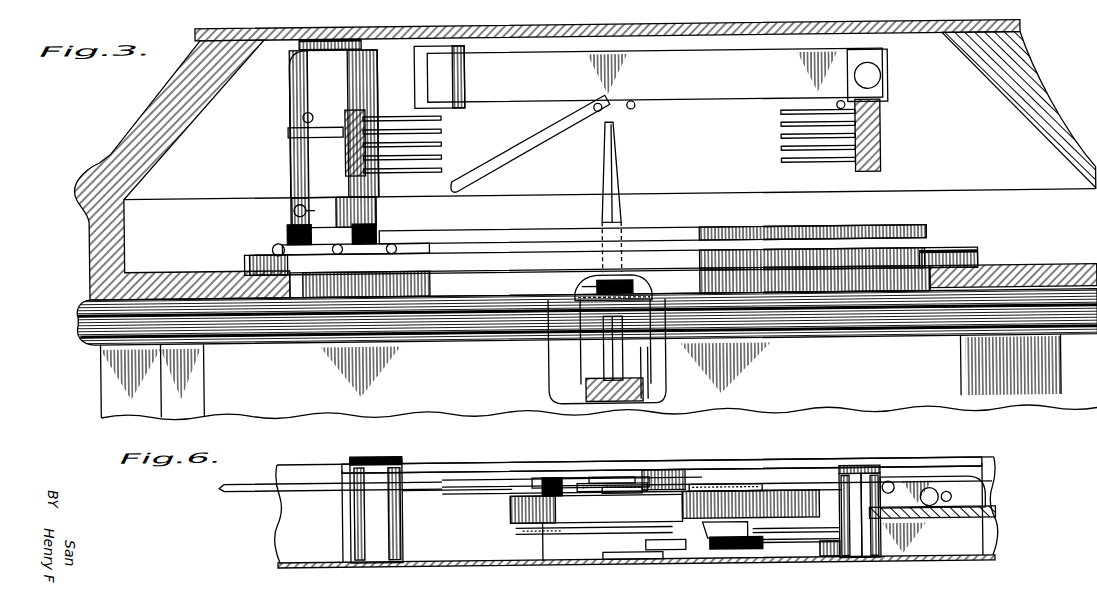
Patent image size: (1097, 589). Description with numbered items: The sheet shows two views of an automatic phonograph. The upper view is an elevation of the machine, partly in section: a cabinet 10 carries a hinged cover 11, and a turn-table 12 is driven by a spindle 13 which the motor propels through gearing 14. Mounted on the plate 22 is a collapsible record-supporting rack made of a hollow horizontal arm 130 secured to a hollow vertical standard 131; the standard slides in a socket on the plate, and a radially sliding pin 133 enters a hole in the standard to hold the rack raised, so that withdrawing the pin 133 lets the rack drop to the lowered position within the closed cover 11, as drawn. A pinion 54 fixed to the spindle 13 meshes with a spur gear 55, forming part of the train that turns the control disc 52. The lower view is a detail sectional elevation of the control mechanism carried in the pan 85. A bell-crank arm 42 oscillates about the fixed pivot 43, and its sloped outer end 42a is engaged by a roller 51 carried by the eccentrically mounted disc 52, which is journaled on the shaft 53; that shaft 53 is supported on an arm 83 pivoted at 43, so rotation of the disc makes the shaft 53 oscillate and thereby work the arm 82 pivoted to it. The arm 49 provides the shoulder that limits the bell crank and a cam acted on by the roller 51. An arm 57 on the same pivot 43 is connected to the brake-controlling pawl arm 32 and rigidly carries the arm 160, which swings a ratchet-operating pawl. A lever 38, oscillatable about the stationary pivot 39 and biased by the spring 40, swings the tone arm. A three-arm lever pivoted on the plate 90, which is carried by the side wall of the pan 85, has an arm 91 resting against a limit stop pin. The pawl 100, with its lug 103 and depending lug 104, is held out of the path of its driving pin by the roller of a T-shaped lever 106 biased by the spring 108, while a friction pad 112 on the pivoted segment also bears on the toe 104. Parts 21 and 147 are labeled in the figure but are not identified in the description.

In FIG. 3, the cabinet 10 is at (587, 355).
In FIG. 3, the hinged cover 11 is at (1017, 74).
In FIG. 3, the turn-table 12 is at (903, 234).
In FIG. 3, the spindle 13 is at (612, 345).
In FIG. 3, the gearing 14 is at (633, 408).
In FIG. 3, the plate 22 is at (975, 263).
In FIG. 3, the pinion 54 is at (578, 293).
In FIG. 3, the spur gear 55 is at (642, 292).
In FIG. 3, the hollow horizontal arm 130 is at (691, 106).
In FIG. 3, the hollow vertical standard 131 is at (305, 161).
In FIG. 3, the pin 133 is at (295, 213).
In FIG. 3, the lever 147 is at (528, 160).
In FIG. 6, the plate 21 is at (558, 481).
In FIG. 6, the pawl arm 32 is at (528, 479).
In FIG. 6, the lever 38 is at (860, 480).
In FIG. 6, the stationary pivot 39 is at (868, 484).
In FIG. 6, the spring 40 is at (992, 538).
In FIG. 6, the arm 42 is at (416, 498).
In FIG. 6, the sloped outer end 42a is at (605, 490).
In FIG. 6, the fixed pivot 43 is at (410, 461).
In FIG. 6, the arm 49 is at (587, 471).
In FIG. 6, the roller 51 is at (603, 481).
In FIG. 6, the disc 52 is at (596, 508).
In FIG. 6, the shaft 53 is at (667, 455).
In FIG. 6, the arm 57 is at (474, 483).
In FIG. 6, the arm 82 is at (690, 471).
In FIG. 6, the arm 83 is at (450, 452).
In FIG. 6, the pan 85 is at (487, 568).
In FIG. 6, the plate 90 is at (923, 486).
In FIG. 6, the arm 91 is at (790, 530).
In FIG. 6, the pawl 100 is at (575, 540).
In FIG. 6, the lug 103 is at (683, 546).
In FIG. 6, the depending lug 104 is at (673, 556).
In FIG. 6, the T shaped lever 106 is at (622, 565).
In FIG. 6, the spring 108 is at (713, 556).
In FIG. 6, the friction pad 112 is at (826, 547).
In FIG. 6, the arm 160 is at (227, 495).